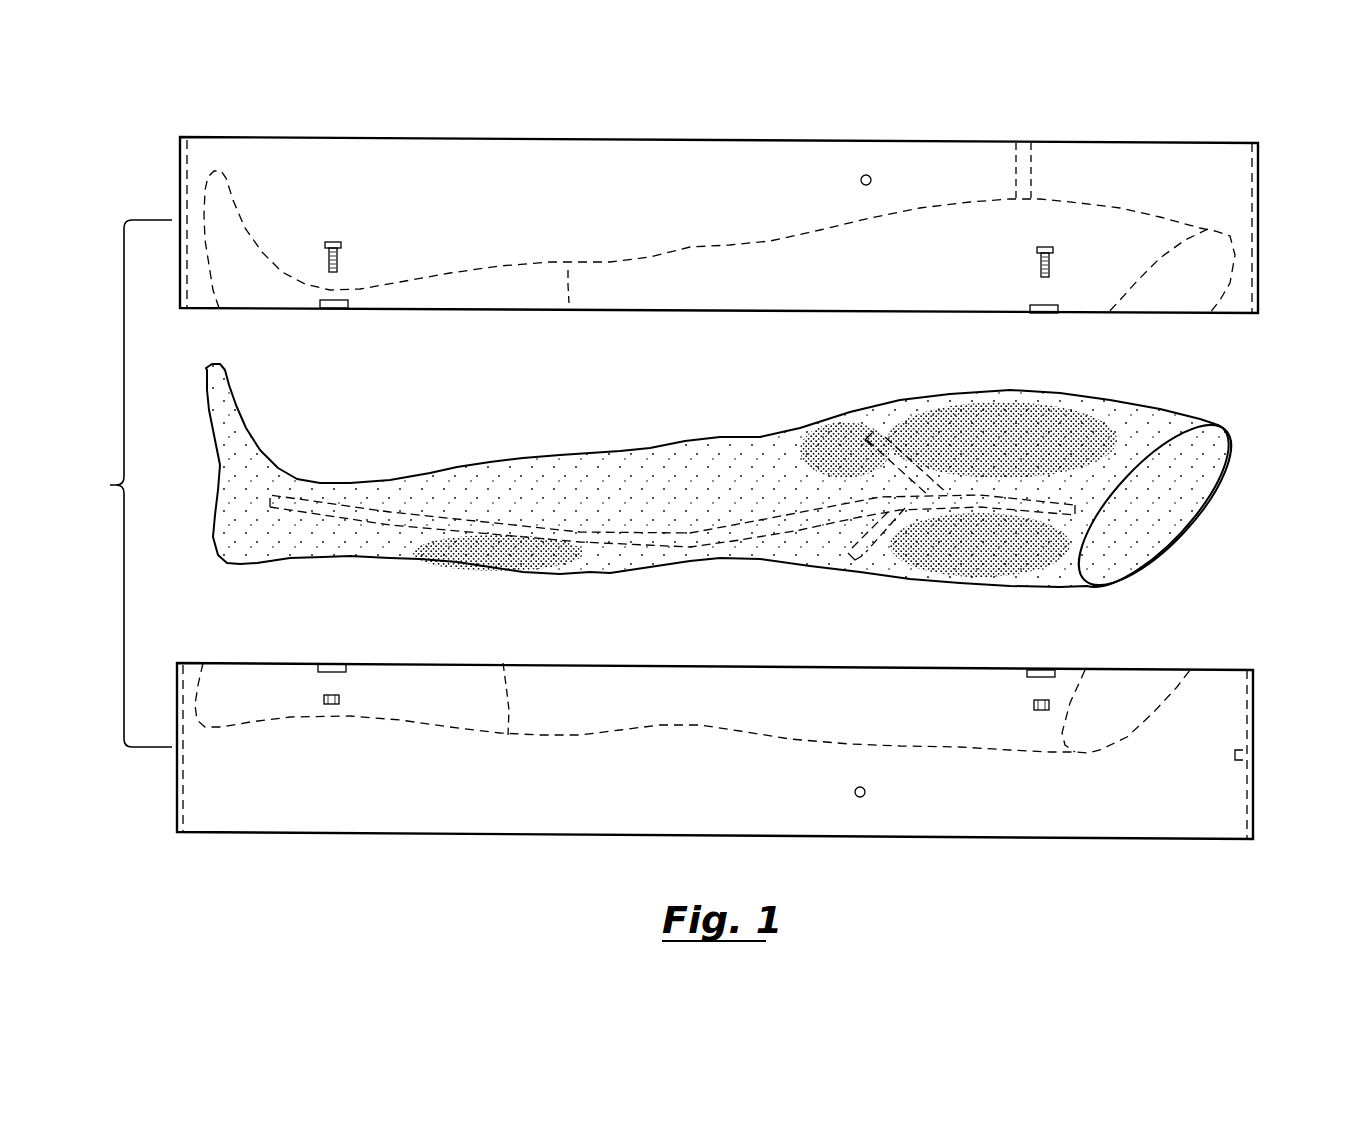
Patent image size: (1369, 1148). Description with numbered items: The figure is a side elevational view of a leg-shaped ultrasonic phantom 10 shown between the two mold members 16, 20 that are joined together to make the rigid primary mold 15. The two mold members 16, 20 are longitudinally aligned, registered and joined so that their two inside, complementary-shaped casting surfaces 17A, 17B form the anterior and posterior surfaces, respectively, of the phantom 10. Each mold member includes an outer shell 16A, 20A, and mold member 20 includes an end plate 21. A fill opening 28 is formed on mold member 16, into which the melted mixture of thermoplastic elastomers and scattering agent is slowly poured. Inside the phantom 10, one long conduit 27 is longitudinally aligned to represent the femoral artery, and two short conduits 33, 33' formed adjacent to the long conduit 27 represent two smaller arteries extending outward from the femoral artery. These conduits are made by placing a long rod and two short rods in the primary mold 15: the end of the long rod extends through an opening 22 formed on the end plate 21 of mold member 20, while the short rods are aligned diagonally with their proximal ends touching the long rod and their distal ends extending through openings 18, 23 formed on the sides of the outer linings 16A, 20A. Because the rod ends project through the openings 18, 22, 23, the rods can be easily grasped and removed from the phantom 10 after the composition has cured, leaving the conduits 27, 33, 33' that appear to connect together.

The phantom 10 is at (1165, 390).
The primary mold 15 is at (108, 486).
The mold member 16 is at (1092, 138).
The outer shell 16A is at (424, 206).
The casting surface 17A is at (567, 313).
The casting surface 17B is at (504, 657).
The opening 18 is at (861, 174).
The mold member 20 is at (1026, 842).
The outer shell 20A is at (413, 809).
The end plate 21 is at (1256, 699).
The opening 22 is at (1262, 753).
The opening 23 is at (856, 797).
The long conduit 27 is at (657, 541).
The fill opening 28 is at (1013, 137).
The short conduit 33 is at (876, 436).
The short conduit 33' is at (838, 559).